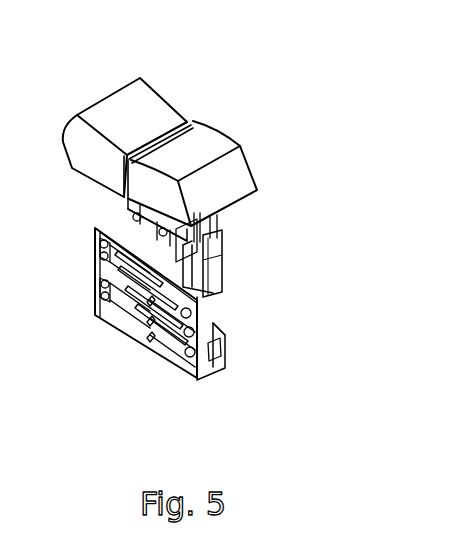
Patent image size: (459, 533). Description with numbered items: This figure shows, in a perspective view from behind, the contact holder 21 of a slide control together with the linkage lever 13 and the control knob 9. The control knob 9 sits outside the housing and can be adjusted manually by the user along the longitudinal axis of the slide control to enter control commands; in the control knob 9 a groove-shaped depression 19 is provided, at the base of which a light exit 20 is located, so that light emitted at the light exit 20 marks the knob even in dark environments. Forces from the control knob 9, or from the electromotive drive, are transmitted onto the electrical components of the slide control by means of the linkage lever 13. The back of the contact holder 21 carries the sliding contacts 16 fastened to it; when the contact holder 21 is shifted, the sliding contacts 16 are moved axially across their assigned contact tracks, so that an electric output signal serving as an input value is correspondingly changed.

The light exit 20 is at (158, 131).
The groove-shaped depression 19 is at (193, 122).
The control knob 9 is at (235, 172).
The linkage lever 13 is at (232, 243).
The contact holder 21 is at (120, 318).
The sliding contacts 16 is at (158, 352).